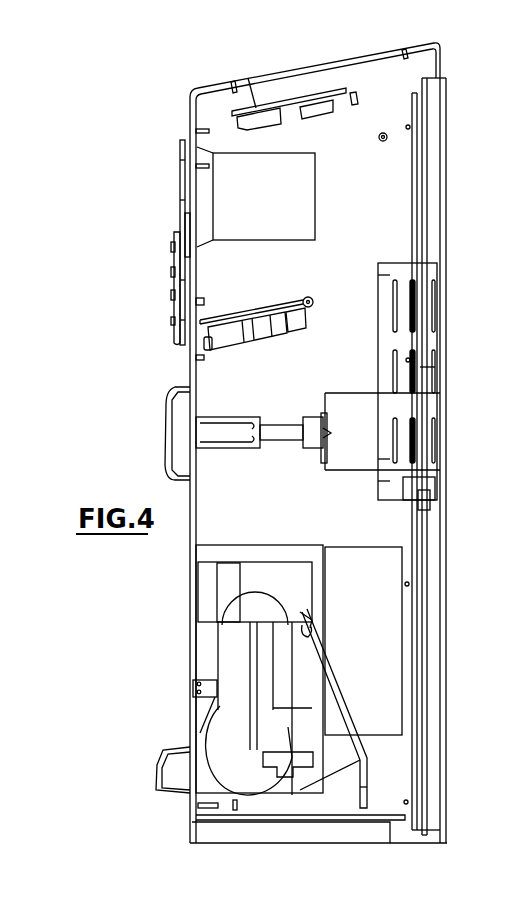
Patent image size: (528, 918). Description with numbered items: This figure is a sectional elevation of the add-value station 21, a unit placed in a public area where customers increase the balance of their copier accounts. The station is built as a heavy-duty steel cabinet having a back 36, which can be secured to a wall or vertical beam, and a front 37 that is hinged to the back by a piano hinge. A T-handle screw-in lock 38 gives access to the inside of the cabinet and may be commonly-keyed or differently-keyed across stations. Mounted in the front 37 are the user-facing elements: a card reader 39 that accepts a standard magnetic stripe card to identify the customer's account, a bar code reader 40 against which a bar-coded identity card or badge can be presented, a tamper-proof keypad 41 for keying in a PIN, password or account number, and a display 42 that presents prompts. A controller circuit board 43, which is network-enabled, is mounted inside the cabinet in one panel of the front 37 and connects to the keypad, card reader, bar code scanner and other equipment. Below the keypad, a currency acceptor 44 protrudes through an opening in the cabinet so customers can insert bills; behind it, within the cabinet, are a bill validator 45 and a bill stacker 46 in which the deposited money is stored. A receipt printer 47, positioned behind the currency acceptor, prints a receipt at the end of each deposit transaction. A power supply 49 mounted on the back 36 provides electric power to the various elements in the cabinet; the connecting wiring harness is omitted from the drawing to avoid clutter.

The add-value station 21 is at (460, 82).
The back 36 is at (449, 163).
The front 37 is at (192, 93).
The T-handle screw-in lock 38 is at (165, 442).
The card reader 39 is at (298, 207).
The bar code reader 40 is at (252, 343).
The keypad 41 is at (174, 291).
The display 42 is at (185, 138).
The controller circuit board 43 is at (333, 93).
The currency acceptor 44 is at (156, 775).
The bill validator 45 is at (290, 546).
The bill stacker 46 is at (380, 547).
The receipt printer 47 is at (335, 722).
The power supply 49 is at (377, 320).